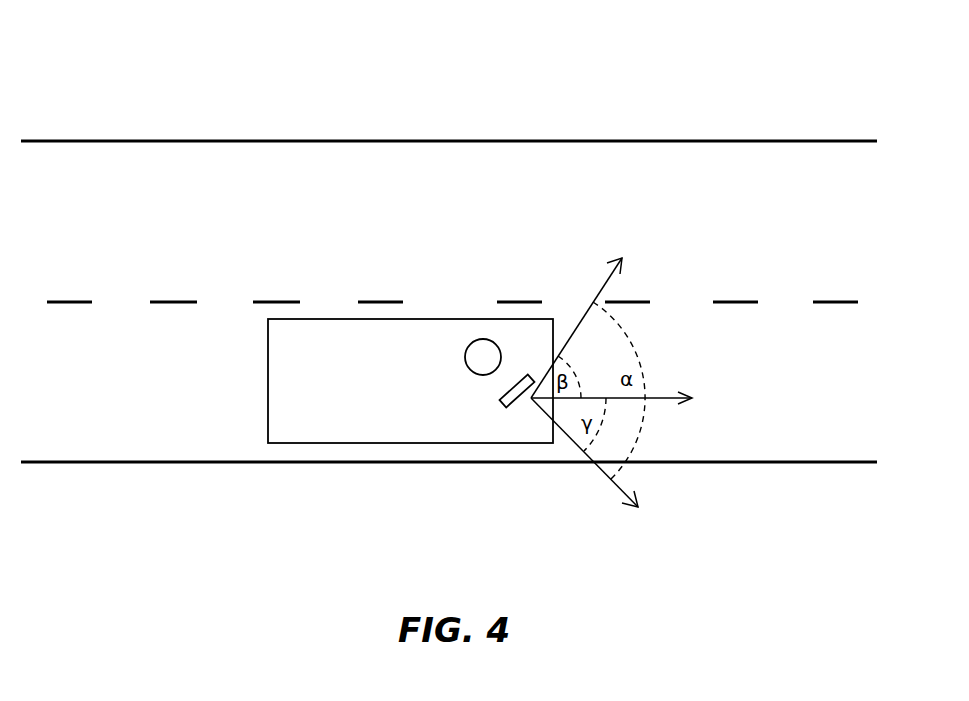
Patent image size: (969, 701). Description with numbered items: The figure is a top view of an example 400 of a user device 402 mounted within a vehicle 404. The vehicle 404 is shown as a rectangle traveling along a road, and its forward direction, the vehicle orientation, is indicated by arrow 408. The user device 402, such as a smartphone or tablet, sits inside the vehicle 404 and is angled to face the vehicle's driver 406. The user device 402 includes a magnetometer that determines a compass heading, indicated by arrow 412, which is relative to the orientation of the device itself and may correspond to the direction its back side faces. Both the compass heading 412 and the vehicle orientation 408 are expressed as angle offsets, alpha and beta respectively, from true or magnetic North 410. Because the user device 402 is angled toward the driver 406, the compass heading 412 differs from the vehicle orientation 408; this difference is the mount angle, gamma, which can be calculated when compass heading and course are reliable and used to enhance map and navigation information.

The example 400 is at (222, 84).
The user device 402 is at (505, 408).
The vehicle 404 is at (328, 445).
The vehicle's driver 406 is at (478, 338).
The vehicle orientation 408 is at (665, 395).
The true/magnetic North 410 is at (605, 275).
The compass heading 412 is at (622, 497).